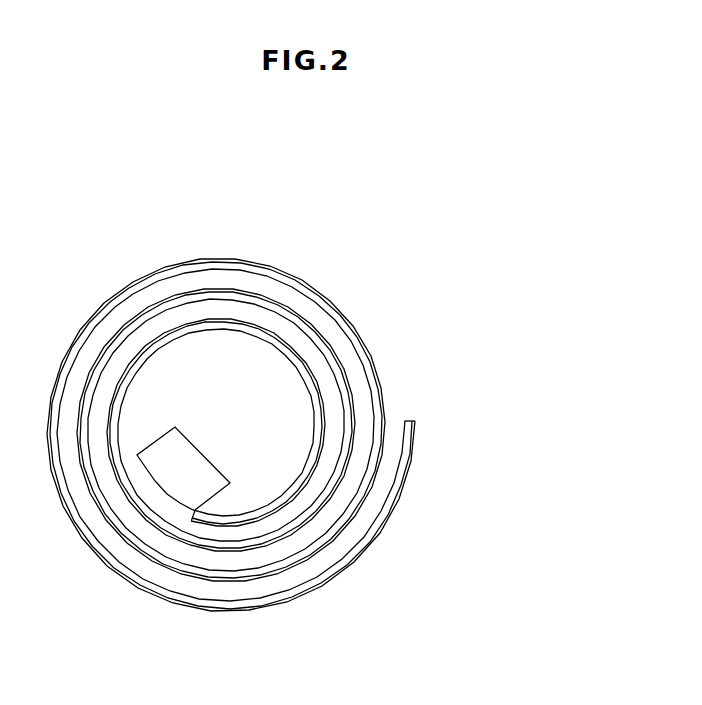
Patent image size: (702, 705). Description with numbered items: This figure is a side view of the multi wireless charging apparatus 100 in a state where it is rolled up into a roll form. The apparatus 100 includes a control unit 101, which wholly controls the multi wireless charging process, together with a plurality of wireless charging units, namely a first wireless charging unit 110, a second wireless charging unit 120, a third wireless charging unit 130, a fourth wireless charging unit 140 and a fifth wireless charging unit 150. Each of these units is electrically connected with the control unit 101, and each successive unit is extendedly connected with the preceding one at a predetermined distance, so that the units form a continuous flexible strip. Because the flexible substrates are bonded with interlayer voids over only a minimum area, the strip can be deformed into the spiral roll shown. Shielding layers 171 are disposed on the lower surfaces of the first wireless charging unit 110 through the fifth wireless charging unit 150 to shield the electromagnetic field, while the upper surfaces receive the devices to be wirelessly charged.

The multi wireless charging apparatus 100 is at (345, 214).
The control unit 101 is at (175, 478).
The first wireless charging unit 110 is at (316, 581).
The second wireless charging unit 120 is at (278, 469).
The third wireless charging unit 130 is at (281, 484).
The fourth wireless charging unit 140 is at (323, 510).
The fifth wireless charging unit 150 is at (365, 499).
The shielding layer 171 is at (213, 613).